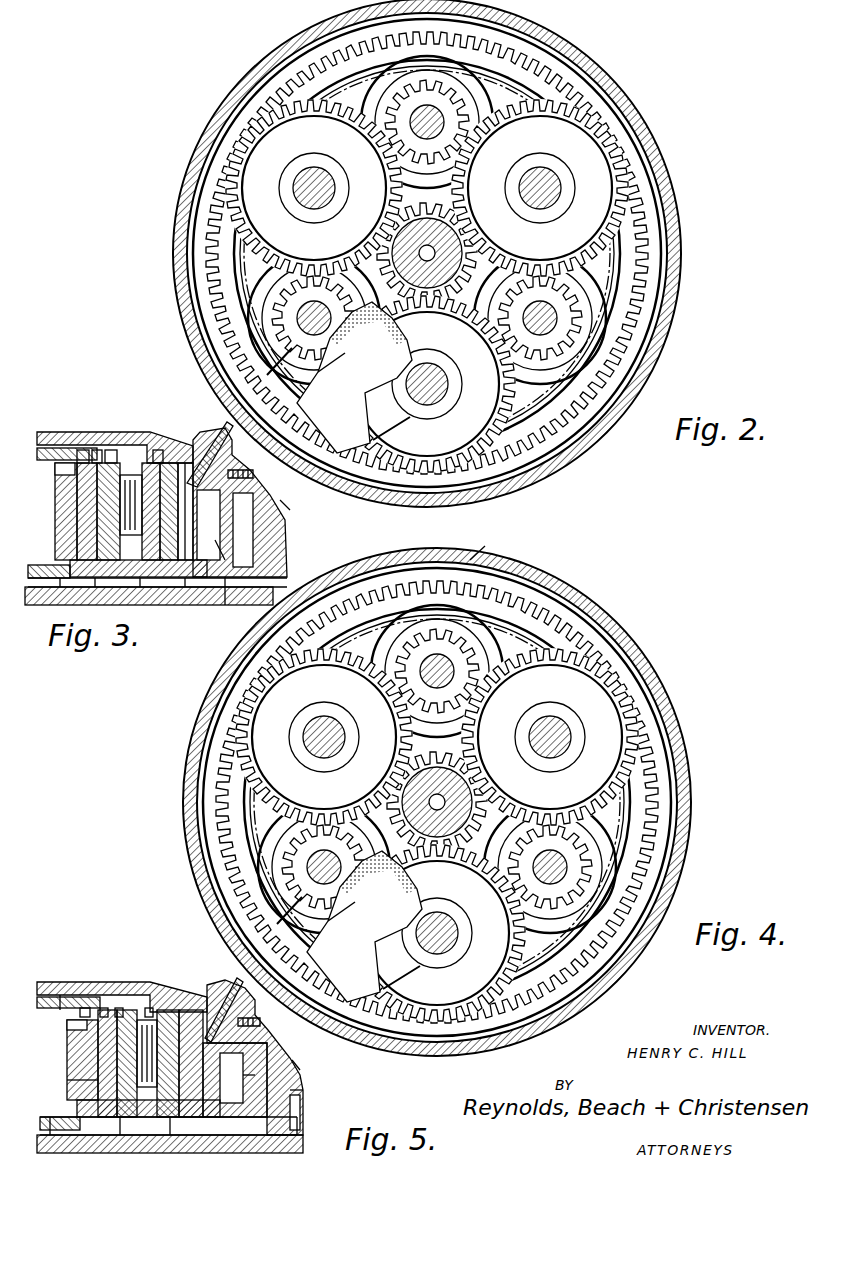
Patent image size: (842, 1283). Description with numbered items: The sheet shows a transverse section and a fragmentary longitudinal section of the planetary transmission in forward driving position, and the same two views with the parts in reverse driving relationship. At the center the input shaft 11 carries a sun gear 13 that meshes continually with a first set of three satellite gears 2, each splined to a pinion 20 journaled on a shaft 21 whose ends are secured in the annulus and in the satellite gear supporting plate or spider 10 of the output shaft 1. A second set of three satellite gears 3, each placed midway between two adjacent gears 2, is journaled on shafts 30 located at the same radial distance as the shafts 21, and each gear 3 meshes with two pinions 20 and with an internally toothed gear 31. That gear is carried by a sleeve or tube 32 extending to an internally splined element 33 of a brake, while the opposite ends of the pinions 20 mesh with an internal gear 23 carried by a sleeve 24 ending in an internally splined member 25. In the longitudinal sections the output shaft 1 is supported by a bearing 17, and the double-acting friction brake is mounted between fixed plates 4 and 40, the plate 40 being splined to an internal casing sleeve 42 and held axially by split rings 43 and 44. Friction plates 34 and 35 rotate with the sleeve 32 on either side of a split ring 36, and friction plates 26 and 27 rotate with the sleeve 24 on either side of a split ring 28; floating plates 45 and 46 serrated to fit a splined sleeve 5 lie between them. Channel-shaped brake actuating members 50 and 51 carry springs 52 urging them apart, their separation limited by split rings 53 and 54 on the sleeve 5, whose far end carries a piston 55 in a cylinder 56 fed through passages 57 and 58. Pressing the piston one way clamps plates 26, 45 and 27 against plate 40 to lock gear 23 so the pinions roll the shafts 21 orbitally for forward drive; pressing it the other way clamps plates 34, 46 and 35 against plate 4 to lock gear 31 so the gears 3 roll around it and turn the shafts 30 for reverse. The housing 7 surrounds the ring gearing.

In FIG. 3, the output shaft 1 is at (225, 605).
In FIG. 5, the output shaft 1 is at (297, 1135).
In FIG. 2, the satellite gears 2 is at (427, 220).
In FIG. 4, the satellite gears 2 is at (437, 731).
In FIG. 2, the satellite gears 3 is at (427, 286).
In FIG. 4, the satellite gears 3 is at (437, 835).
In FIG. 3, the fixed friction plate 4 is at (215, 560).
In FIG. 5, the fixed friction plate 4 is at (243, 1075).
In FIG. 3, the sleeve 5 is at (70, 566).
In FIG. 5, the sleeve 5 is at (77, 1106).
In FIG. 2, the housing 7 is at (253, 0).
In FIG. 2, the satellite gear supporting plate or spider 10 is at (339, 377).
In FIG. 4, the satellite gear supporting plate or spider 10 is at (349, 926).
In FIG. 2, the input shaft 11 is at (404, 250).
In FIG. 4, the input shaft 11 is at (417, 798).
In FIG. 2, the sun gear 13 is at (442, 253).
In FIG. 4, the sun gear 13 is at (453, 802).
In FIG. 5, the bearing 17 is at (300, 1110).
In FIG. 2, the pinions 20 is at (517, 211).
In FIG. 4, the pinions 20 is at (526, 761).
In FIG. 2, the shaft 21 is at (427, 220).
In FIG. 4, the shaft 21 is at (437, 769).
In FIG. 2, the internal gear 23 is at (511, 355).
In FIG. 4, the internal gear 23 is at (521, 895).
In FIG. 3, the sleeve 24 is at (40, 460).
In FIG. 5, the sleeve 24 is at (40, 1008).
In FIG. 5, the internally splined member 25 is at (62, 1010).
In FIG. 3, the friction ring or plate 26 is at (83, 450).
In FIG. 5, the friction ring or plate 26 is at (85, 1008).
In FIG. 3, the friction ring or plate 27 is at (110, 450).
In FIG. 5, the friction ring or plate 27 is at (119, 1008).
In FIG. 3, the split ring 28 is at (97, 450).
In FIG. 5, the split ring 28 is at (104, 1008).
In FIG. 2, the shafts 30 is at (427, 286).
In FIG. 4, the shafts 30 is at (437, 835).
In FIG. 2, the internally toothed gear 31 is at (445, 253).
In FIG. 4, the internally toothed gear 31 is at (455, 802).
In FIG. 3, the sleeve or tube 32 is at (45, 432).
In FIG. 5, the sleeve or tube 32 is at (50, 982).
In FIG. 3, the element 33 is at (227, 422).
In FIG. 5, the element 33 is at (237, 980).
In FIG. 3, the friction plate or ring 34 is at (151, 463).
In FIG. 5, the friction plate or ring 34 is at (127, 1063).
In FIG. 3, the friction plate or ring 35 is at (186, 463).
In FIG. 5, the friction plate or ring 35 is at (191, 1010).
In FIG. 3, the split ring 36 is at (169, 463).
In FIG. 5, the split ring 36 is at (168, 1010).
In FIG. 3, the fixed friction plate 40 is at (55, 527).
In FIG. 5, the fixed friction plate 40 is at (82, 1077).
In FIG. 3, the internal sleeve 42 is at (32, 565).
In FIG. 5, the internal sleeve 42 is at (42, 1117).
In FIG. 3, the split ring 43 is at (30, 605).
In FIG. 5, the split ring 43 is at (50, 1117).
In FIG. 3, the split ring 44 is at (60, 587).
In FIG. 5, the split ring 44 is at (60, 1153).
In FIG. 3, the floating friction plate 45 is at (97, 510).
In FIG. 5, the floating friction plate 45 is at (67, 1060).
In FIG. 3, the floating friction plate 46 is at (185, 587).
In FIG. 5, the floating friction plate 46 is at (235, 1080).
In FIG. 3, the brake actuating friction member 50 is at (131, 475).
In FIG. 5, the brake actuating friction member 50 is at (137, 1040).
In FIG. 3, the brake actuating friction member 51 is at (158, 450).
In FIG. 5, the brake actuating friction member 51 is at (149, 1008).
In FIG. 3, the springs 52 is at (77, 492).
In FIG. 5, the springs 52 is at (108, 1010).
In FIG. 3, the split ring 53 is at (95, 587).
In FIG. 5, the split ring 53 is at (120, 1135).
In FIG. 3, the split ring 54 is at (140, 587).
In FIG. 5, the split ring 54 is at (170, 1135).
In FIG. 3, the piston 55 is at (243, 547).
In FIG. 5, the piston 55 is at (275, 1092).
In FIG. 3, the cylinder 56 is at (270, 478).
In FIG. 5, the cylinder 56 is at (268, 1030).
In FIG. 3, the passage 57 is at (253, 474).
In FIG. 5, the passage 57 is at (260, 1022).
In FIG. 3, the passage 58 is at (283, 506).
In FIG. 5, the passage 58 is at (300, 1068).